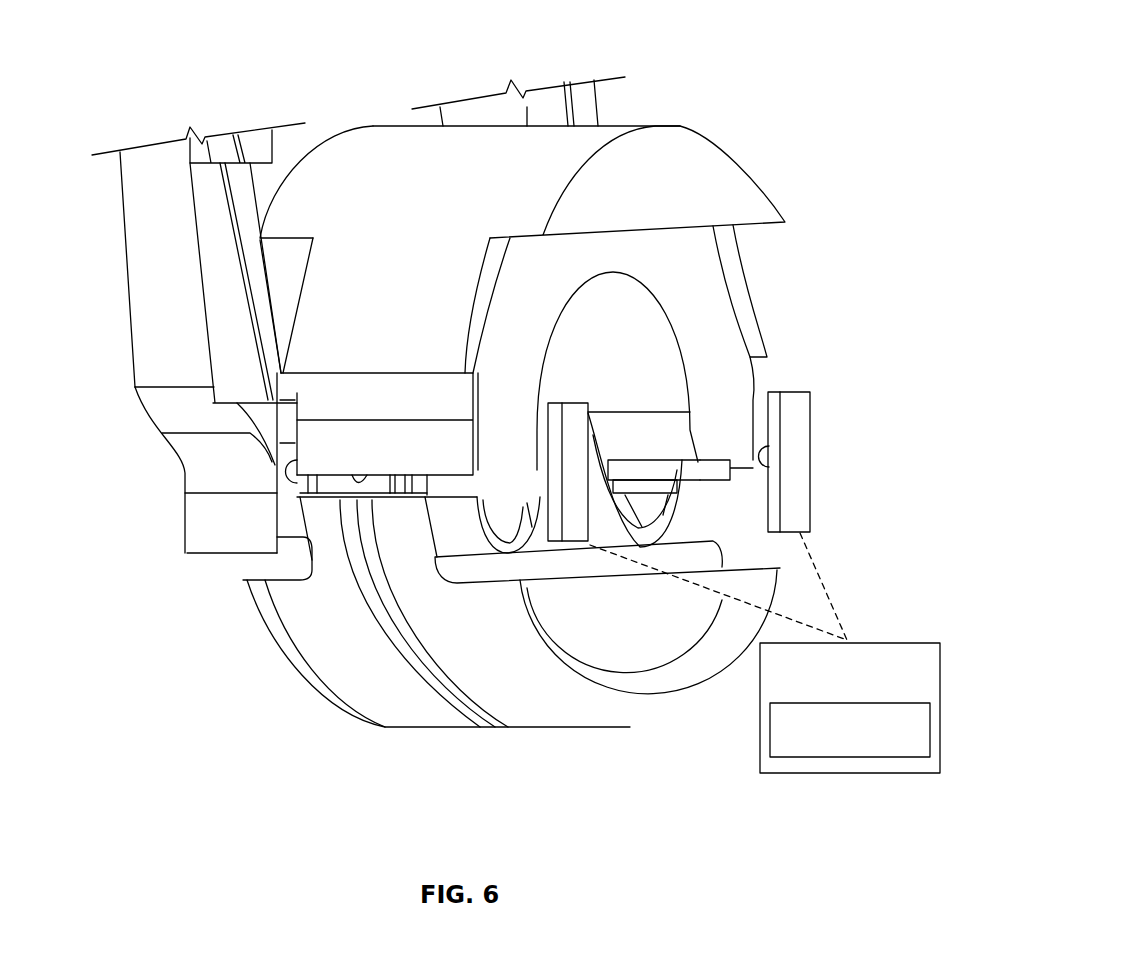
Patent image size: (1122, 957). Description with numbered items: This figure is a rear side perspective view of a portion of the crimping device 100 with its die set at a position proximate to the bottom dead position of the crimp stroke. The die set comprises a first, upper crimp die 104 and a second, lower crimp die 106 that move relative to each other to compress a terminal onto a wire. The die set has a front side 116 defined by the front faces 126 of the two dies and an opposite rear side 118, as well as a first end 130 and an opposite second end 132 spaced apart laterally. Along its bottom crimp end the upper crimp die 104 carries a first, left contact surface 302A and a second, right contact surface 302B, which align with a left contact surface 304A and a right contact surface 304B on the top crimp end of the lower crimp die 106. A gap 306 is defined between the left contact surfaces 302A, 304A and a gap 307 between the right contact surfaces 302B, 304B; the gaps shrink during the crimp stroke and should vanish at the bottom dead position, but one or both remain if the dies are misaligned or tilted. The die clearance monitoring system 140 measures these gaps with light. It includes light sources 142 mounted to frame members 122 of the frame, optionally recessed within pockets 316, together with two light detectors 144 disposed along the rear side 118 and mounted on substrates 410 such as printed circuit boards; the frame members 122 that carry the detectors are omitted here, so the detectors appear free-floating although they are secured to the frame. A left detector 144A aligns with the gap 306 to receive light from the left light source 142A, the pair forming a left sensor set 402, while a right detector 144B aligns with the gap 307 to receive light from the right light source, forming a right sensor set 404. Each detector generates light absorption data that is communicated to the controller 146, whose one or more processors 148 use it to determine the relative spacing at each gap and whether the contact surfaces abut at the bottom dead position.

The crimping device 100 is at (382, 100).
The first crimp die 104 is at (510, 185).
The second crimp die 106 is at (338, 658).
The front side 116 is at (305, 152).
The rear side 118 is at (682, 273).
The frame members 122 is at (172, 402).
The front faces 126 is at (267, 440).
The first end 130 is at (316, 381).
The second end 132 is at (770, 280).
The die clearance monitoring system 140 is at (890, 442).
The light source 142 is at (284, 473).
The left light source 142A is at (284, 467).
The light detector 144 is at (769, 452).
The first detector 144A is at (575, 405).
The second detector 144B is at (770, 462).
The controller 146 is at (903, 643).
The processors 148 is at (903, 757).
The first contact surface 302A is at (352, 475).
The second contact surface 302B is at (705, 460).
The first contact surface 304A is at (397, 493).
The second contact surface 304B is at (722, 475).
The gap 306 is at (390, 487).
The gap 307 is at (652, 462).
The pockets 316 is at (290, 512).
The left sensor set 402 is at (283, 470).
The right sensor set 404 is at (820, 445).
The substrates 410 is at (810, 497).